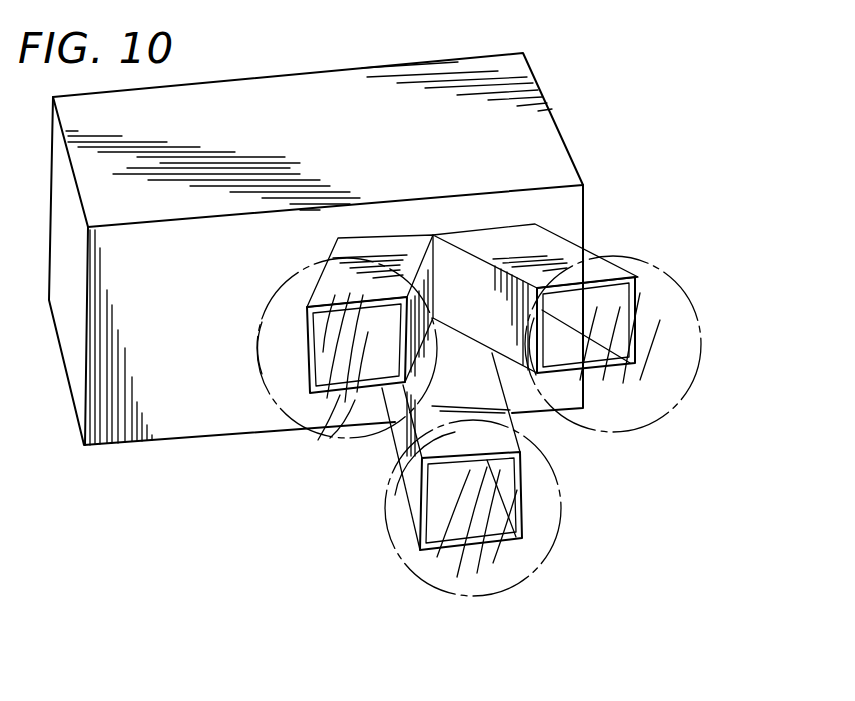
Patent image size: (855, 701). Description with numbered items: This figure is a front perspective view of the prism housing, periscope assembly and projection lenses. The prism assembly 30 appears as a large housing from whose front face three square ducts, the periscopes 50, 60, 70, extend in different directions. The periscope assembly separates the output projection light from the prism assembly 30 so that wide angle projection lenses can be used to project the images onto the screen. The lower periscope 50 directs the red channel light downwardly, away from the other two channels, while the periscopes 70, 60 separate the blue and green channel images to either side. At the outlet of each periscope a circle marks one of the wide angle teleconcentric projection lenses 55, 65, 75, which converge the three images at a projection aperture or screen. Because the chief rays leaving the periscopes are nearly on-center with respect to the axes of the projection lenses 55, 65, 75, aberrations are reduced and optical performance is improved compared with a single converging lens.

The prism assembly 30 is at (396, 66).
The lower periscope 50 is at (402, 441).
The projection lens 55 is at (393, 537).
The periscope 60 is at (338, 251).
The projection lens 65 is at (279, 314).
The periscope 70 is at (590, 250).
The projection lens 75 is at (660, 282).